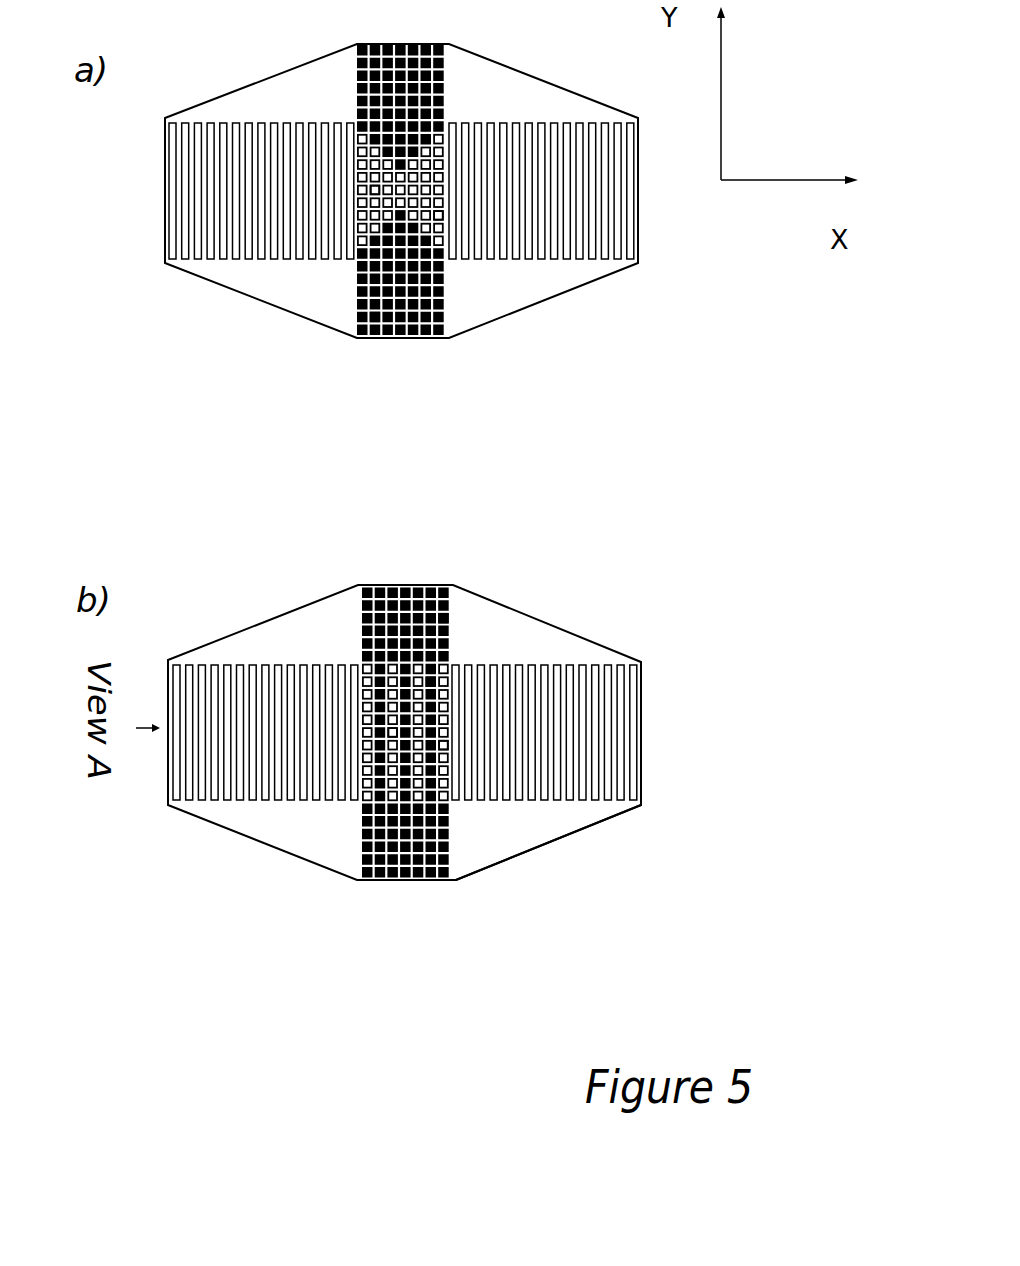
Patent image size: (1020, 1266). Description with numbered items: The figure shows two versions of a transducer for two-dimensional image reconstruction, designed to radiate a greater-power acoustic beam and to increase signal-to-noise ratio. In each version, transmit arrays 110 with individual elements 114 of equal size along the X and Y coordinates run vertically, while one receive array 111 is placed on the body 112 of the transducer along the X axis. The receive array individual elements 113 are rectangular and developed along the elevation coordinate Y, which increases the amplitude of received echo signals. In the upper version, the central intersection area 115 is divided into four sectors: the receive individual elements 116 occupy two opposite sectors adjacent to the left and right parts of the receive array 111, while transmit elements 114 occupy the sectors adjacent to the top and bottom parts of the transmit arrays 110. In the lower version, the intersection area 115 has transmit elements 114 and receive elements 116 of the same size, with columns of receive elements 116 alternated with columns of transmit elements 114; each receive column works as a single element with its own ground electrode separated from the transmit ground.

The transmit array 110 is at (440, 337).
The receive array 111 is at (641, 662).
The transducer body 112 is at (573, 815).
The receive array individual element 113 is at (178, 790).
The transmit array individual element 114 is at (382, 318).
The intersection area 115 is at (377, 190).
The receive individual element 116 is at (443, 217).